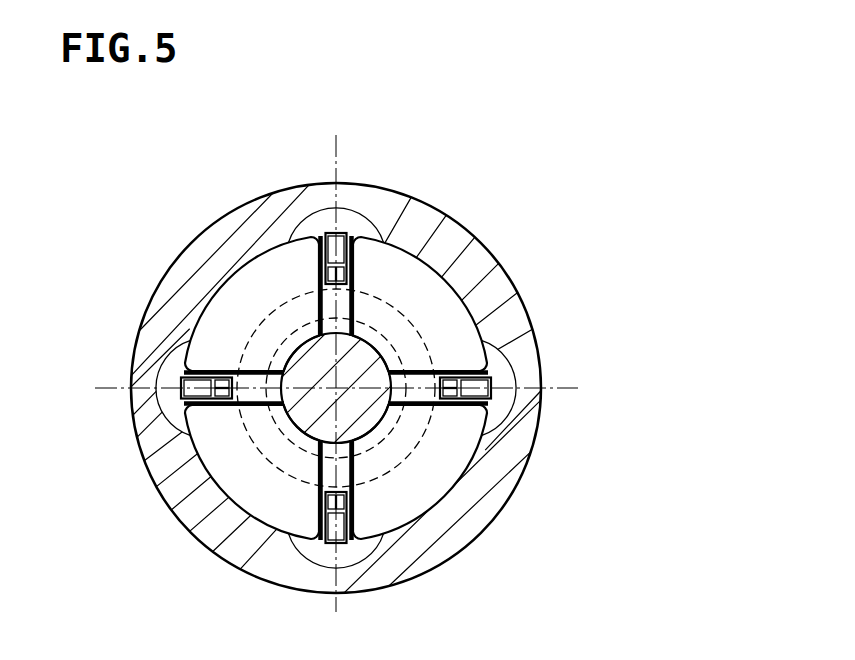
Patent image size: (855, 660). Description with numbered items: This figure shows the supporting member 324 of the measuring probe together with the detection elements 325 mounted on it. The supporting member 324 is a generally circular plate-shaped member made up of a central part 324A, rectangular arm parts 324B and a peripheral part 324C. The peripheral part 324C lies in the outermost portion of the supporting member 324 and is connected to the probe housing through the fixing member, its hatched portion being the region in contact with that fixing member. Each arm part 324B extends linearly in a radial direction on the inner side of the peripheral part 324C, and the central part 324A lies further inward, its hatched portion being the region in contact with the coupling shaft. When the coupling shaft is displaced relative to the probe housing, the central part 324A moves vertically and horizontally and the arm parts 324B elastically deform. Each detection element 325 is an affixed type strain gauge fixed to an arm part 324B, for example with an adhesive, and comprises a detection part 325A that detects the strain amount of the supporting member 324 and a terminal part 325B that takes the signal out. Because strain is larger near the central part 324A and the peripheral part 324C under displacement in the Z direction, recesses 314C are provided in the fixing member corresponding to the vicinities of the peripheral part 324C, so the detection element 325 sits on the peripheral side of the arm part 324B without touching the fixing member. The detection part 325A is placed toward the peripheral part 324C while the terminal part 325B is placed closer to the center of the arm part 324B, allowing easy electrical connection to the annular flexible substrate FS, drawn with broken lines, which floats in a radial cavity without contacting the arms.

The supporting member 324 is at (402, 384).
The central part 324A is at (376, 341).
The arm part 324B is at (425, 371).
The peripheral part 324C is at (402, 384).
The recess 314C is at (363, 227).
The detection element 325 is at (405, 388).
The detection part 325A is at (525, 339).
The terminal part 325B is at (523, 412).
The flexible substrate FS is at (384, 455).